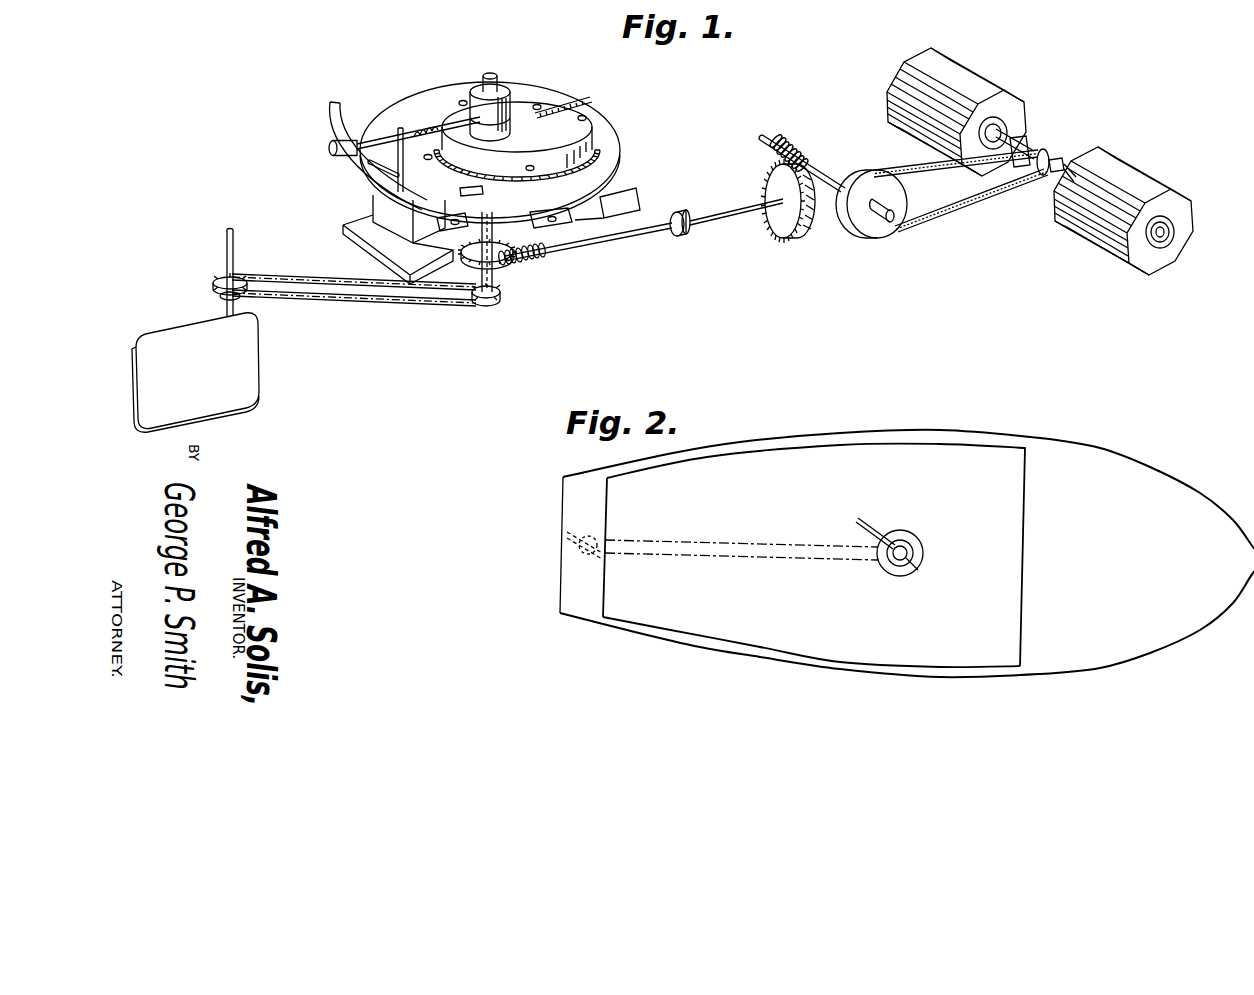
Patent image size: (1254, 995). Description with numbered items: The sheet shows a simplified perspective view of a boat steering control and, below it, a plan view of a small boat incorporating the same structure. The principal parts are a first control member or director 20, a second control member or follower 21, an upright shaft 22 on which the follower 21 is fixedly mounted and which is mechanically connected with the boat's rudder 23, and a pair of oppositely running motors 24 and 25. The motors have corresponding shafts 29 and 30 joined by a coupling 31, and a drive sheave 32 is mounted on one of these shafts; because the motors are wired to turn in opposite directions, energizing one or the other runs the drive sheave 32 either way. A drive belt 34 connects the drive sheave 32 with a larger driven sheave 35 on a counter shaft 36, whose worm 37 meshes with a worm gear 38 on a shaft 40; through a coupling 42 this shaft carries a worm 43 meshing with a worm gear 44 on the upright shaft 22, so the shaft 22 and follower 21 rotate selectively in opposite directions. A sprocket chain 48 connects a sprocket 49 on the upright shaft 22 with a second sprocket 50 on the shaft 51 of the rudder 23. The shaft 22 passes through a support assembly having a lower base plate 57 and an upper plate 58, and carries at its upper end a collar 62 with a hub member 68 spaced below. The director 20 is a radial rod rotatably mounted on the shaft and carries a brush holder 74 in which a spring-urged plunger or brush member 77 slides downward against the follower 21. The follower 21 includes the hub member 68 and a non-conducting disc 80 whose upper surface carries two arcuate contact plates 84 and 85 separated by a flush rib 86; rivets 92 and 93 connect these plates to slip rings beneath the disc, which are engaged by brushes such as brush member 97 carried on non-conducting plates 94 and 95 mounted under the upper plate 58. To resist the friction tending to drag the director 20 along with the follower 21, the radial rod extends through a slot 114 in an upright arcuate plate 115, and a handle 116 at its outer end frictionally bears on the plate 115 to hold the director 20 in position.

In FIG. 1, the director 20 is at (399, 118).
In FIG. 2, the director 20 is at (853, 514).
In FIG. 1, the follower 21 is at (517, 112).
In FIG. 2, the follower 21 is at (916, 538).
In FIG. 1, the upright shaft 22 is at (485, 78).
In FIG. 1, the rudder 23 is at (260, 362).
In FIG. 2, the rudder 23 is at (566, 530).
In FIG. 1, the motor 24 is at (1016, 101).
In FIG. 1, the motor 25 is at (1198, 232).
In FIG. 1, the motor shaft 29 is at (1030, 139).
In FIG. 1, the motor shaft 30 is at (1056, 160).
In FIG. 1, the coupling 31 is at (1012, 186).
In FIG. 1, the drive sheave 32 is at (1046, 182).
In FIG. 1, the drive belt 34 is at (947, 208).
In FIG. 1, the driven sheave 35 is at (868, 242).
In FIG. 1, the counter shaft 36 is at (816, 163).
In FIG. 1, the worm 37 is at (782, 145).
In FIG. 1, the worm gear 38 is at (791, 243).
In FIG. 1, the shaft 40 is at (706, 230).
In FIG. 1, the coupling 42 is at (677, 238).
In FIG. 1, the worm 43 is at (512, 265).
In FIG. 1, the worm gear 44 is at (546, 255).
In FIG. 1, the sprocket chain 48 is at (400, 306).
In FIG. 2, the sprocket chain 48 is at (750, 542).
In FIG. 1, the sprocket 49 is at (490, 306).
In FIG. 1, the second sprocket 50 is at (222, 276).
In FIG. 1, the rudder shaft 51 is at (238, 262).
In FIG. 1, the lower base plate 57 is at (634, 196).
In FIG. 1, the upper plate 58 is at (608, 170).
In FIG. 1, the collar 62 is at (502, 86).
In FIG. 1, the hub member 68 is at (528, 137).
In FIG. 1, the brush holder 74 is at (424, 130).
In FIG. 1, the brush member 77 is at (408, 170).
In FIG. 1, the non-conducting disc 80 is at (603, 160).
In FIG. 1, the contact plate 84 is at (446, 92).
In FIG. 1, the contact plate 85 is at (597, 133).
In FIG. 1, the rib 86 is at (582, 115).
In FIG. 1, the rivets 92 is at (585, 97).
In FIG. 1, the rivets 93 is at (592, 118).
In FIG. 1, the non-conducting plate 94 is at (566, 215).
In FIG. 1, the non-conducting plate 95 is at (438, 219).
In FIG. 1, the brush member 97 is at (489, 190).
In FIG. 1, the slot 114 is at (333, 128).
In FIG. 1, the arcuate plate 115 is at (368, 170).
In FIG. 1, the handle 116 is at (331, 153).